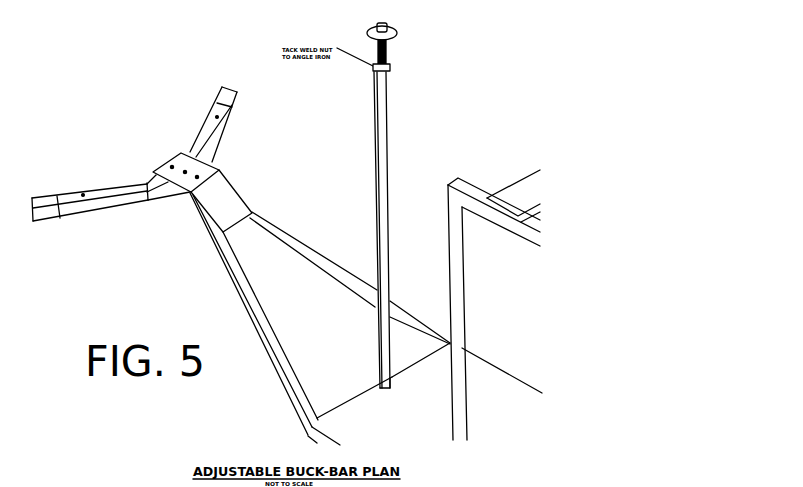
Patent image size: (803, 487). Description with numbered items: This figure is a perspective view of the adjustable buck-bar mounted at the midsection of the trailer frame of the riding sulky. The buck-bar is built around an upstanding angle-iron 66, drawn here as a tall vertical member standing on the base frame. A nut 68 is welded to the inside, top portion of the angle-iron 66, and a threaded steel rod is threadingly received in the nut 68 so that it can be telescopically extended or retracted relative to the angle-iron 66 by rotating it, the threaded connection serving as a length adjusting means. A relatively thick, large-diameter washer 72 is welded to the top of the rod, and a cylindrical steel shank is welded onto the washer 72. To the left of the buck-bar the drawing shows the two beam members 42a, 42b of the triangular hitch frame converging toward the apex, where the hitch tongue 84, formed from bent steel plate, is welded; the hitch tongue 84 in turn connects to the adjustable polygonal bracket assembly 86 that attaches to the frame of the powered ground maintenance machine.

The beam member 42a is at (276, 336).
The beam member 42b is at (357, 288).
The angle-iron 66 is at (378, 232).
The nut 68 is at (390, 67).
The large-diameter washer 72 is at (370, 33).
The hitch tongue 84 is at (212, 206).
The adjustable polygonal bracket assembly 86 is at (128, 183).